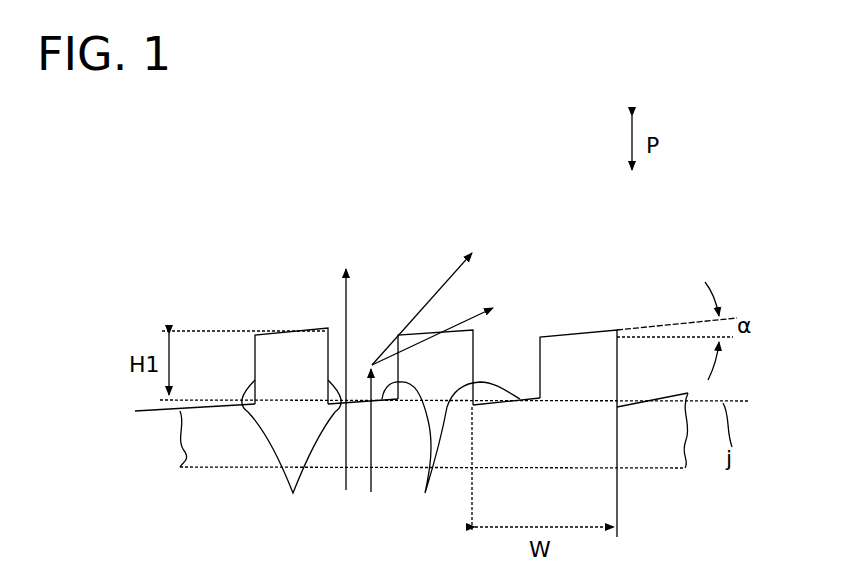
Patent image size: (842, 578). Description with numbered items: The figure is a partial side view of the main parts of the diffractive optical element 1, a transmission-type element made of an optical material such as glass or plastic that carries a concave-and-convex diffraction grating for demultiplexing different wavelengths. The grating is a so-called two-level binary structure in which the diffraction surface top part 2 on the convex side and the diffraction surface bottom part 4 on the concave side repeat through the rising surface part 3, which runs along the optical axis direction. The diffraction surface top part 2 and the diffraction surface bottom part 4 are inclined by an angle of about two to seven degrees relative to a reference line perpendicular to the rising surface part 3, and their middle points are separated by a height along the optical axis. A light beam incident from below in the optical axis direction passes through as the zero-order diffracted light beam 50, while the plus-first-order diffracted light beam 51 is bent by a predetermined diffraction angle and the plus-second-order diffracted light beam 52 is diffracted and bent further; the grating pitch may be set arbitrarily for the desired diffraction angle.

The diffractive optical element 1 is at (654, 478).
The diffraction surface top part 2 is at (292, 329).
The rising surface part 3 is at (530, 308).
The diffraction surface bottom part 4 is at (445, 447).
The 0-order diffracted light beam 50 is at (348, 296).
The +1-order diffracted light beam 51 is at (450, 277).
The +2-order diffracted light beam 52 is at (475, 325).